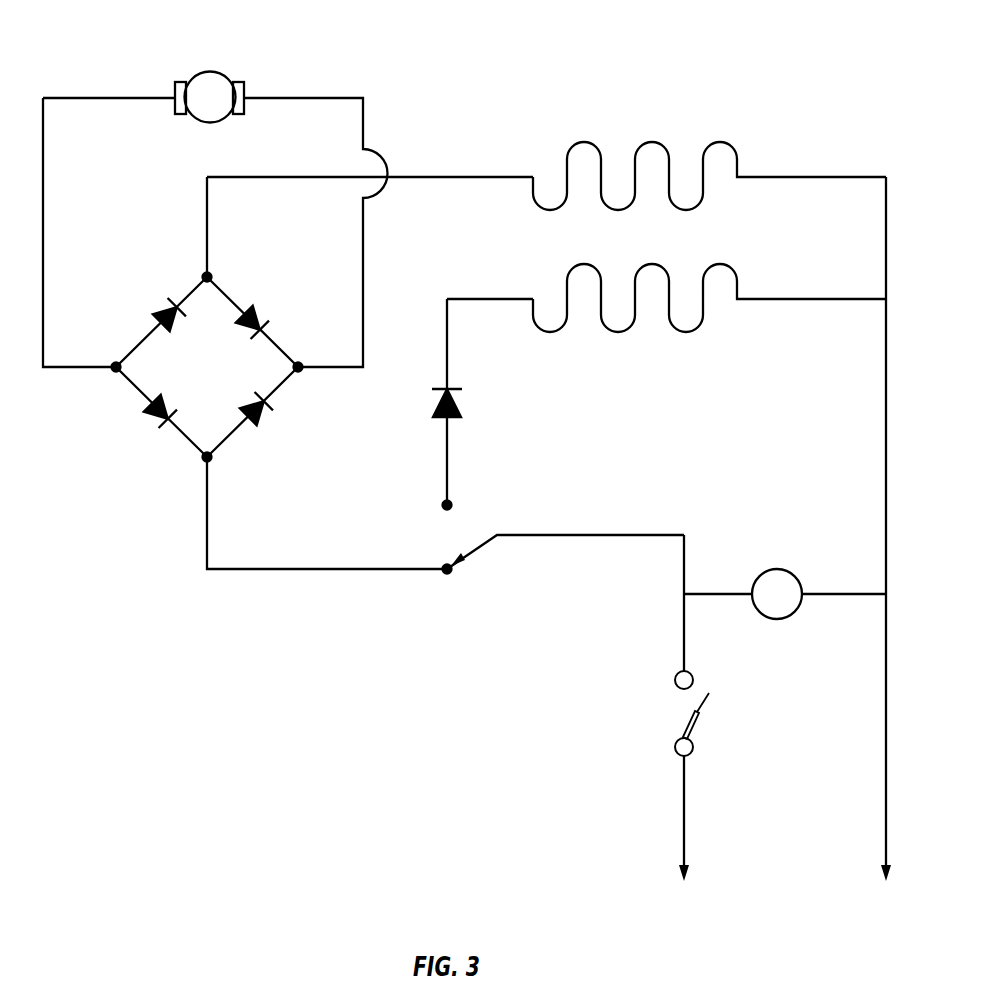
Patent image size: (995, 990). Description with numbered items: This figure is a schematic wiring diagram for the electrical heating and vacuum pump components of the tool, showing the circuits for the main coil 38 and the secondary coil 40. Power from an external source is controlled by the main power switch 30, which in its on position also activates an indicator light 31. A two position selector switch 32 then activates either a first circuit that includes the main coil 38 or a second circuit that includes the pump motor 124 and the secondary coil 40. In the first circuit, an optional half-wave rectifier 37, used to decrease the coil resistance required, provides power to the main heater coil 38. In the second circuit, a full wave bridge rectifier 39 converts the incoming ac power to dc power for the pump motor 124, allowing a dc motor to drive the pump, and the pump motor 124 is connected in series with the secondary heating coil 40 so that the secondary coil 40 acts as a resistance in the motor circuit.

The pump motor 124 is at (212, 71).
The secondary coil 40 is at (652, 142).
The main coil 38 is at (686, 333).
The full wave bridge rectifier 39 is at (130, 436).
The half-wave rectifier 37 is at (438, 403).
The two position selector switch 32 is at (470, 525).
The indicator light 31 is at (779, 569).
The main power switch 30 is at (668, 716).